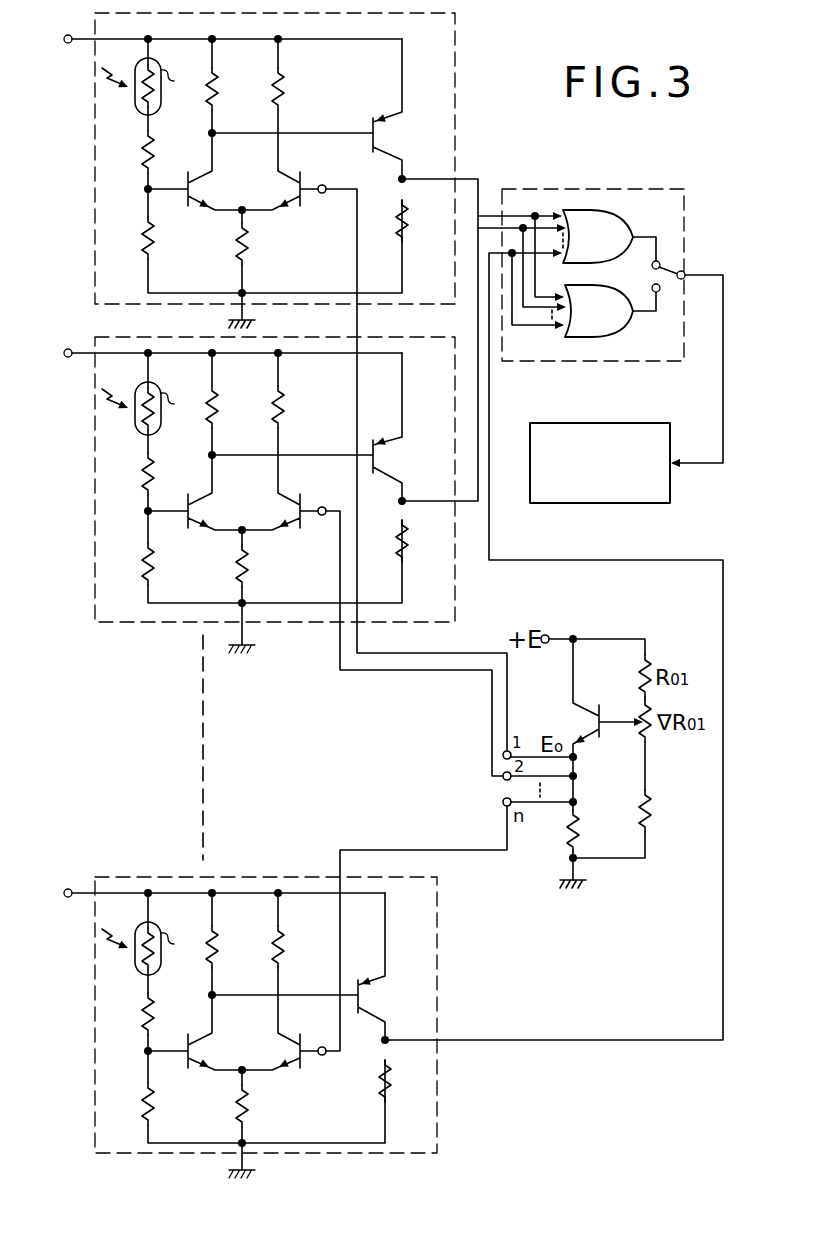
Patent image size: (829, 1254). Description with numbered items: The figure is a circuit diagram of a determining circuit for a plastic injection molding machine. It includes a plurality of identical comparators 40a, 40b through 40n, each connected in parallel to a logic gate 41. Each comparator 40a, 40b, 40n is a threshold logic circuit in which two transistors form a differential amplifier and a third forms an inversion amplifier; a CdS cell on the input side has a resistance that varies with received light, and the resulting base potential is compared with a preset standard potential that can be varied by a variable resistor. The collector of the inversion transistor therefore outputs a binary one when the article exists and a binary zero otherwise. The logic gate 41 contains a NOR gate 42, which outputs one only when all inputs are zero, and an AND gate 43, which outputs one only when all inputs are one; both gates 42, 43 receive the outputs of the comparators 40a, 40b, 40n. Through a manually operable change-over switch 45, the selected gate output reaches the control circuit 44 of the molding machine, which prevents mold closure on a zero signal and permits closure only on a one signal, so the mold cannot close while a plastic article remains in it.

The first comparator 40a is at (456, 50).
The comparator 40b is at (456, 575).
The comparator 40n is at (437, 950).
The logic gate 41 is at (624, 187).
The NOR gate 42 is at (636, 197).
The AND gate 43 is at (620, 330).
The control circuit 44 is at (637, 422).
The manually operable change-over switch 45 is at (682, 262).